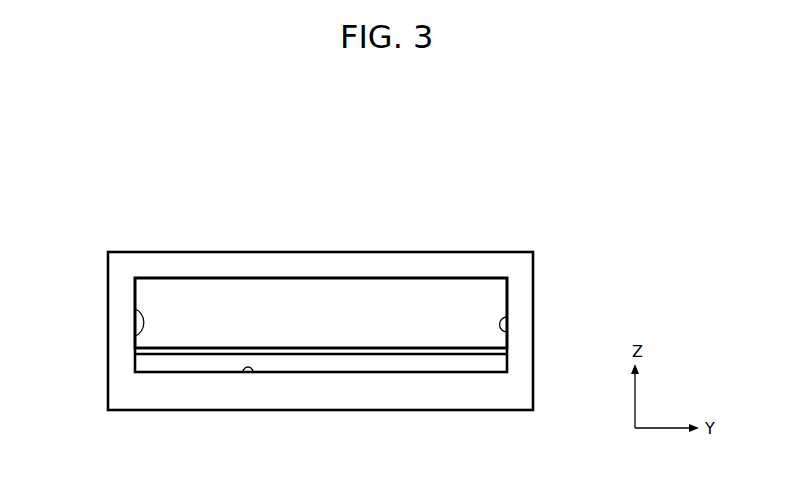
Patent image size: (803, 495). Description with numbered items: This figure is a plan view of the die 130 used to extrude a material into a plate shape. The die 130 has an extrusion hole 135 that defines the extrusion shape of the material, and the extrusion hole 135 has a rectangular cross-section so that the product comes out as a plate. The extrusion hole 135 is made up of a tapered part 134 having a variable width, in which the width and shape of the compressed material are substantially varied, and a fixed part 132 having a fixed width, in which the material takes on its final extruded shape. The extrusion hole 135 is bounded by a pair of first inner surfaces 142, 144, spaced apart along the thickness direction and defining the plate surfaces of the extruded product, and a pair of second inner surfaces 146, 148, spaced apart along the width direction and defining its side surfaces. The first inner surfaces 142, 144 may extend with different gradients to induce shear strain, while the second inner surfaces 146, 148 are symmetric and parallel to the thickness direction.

The die 130 is at (519, 224).
The fixed part 132 is at (318, 357).
The tapered part 134 is at (413, 311).
The extrusion hole 135 is at (458, 191).
The first inner surface 142 is at (248, 312).
The first inner surface 144 is at (250, 372).
The second inner surface 146 is at (135, 312).
The second inner surface 148 is at (507, 332).